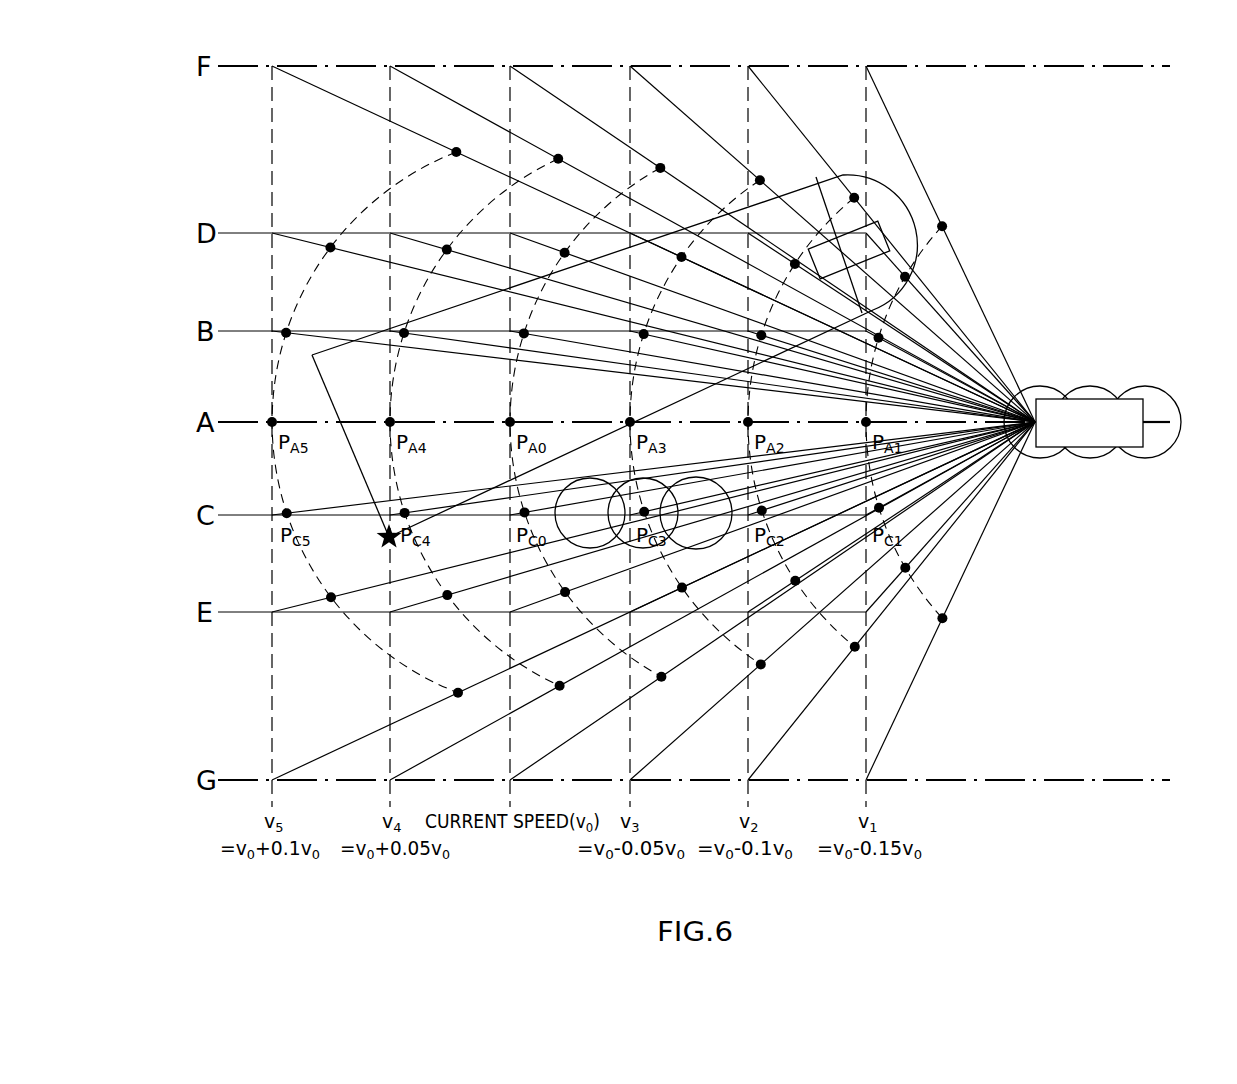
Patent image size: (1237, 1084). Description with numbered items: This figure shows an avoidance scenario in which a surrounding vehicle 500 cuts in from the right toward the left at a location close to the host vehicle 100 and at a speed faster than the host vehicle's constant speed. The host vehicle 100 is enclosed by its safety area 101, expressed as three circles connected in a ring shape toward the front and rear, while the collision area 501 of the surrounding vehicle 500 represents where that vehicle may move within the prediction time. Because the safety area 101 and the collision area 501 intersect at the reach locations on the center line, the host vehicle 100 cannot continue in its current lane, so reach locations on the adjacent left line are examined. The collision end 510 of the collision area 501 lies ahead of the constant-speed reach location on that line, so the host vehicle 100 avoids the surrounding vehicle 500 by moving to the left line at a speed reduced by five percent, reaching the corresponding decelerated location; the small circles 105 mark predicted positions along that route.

The host vehicle 100 is at (1088, 448).
The safety area 101 is at (1143, 386).
The predicted target positions 105 is at (717, 547).
The surrounding vehicle 500 is at (892, 196).
The collision area 501 is at (797, 190).
The collision end 510 is at (383, 541).